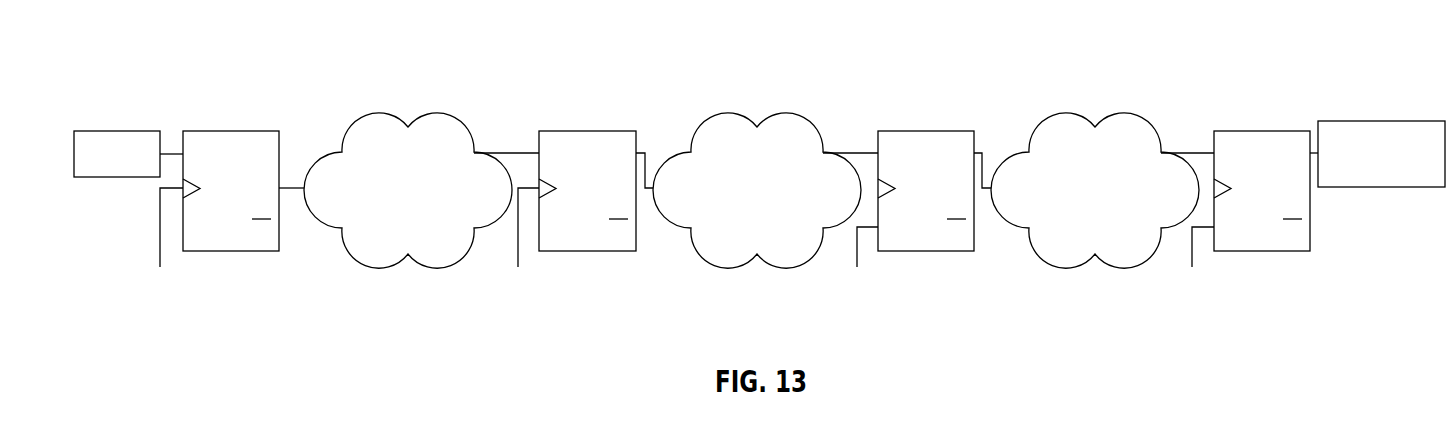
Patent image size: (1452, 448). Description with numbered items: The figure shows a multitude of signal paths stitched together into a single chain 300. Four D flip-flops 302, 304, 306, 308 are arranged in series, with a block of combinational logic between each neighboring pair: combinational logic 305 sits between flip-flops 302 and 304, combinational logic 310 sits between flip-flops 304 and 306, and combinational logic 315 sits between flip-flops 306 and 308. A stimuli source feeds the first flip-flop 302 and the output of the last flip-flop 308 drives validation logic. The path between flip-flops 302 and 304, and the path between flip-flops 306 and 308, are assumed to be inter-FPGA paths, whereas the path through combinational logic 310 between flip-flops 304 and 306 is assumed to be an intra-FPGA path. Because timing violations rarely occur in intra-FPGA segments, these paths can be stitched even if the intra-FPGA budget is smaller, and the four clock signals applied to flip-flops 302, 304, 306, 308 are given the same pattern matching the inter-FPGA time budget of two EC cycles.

The chain 300 is at (804, 40).
The flip-flop 302 is at (232, 131).
The flip-flop 304 is at (589, 131).
The flip-flop 306 is at (925, 131).
The flip-flop 308 is at (1262, 131).
The combinational logic 305 is at (377, 267).
The combinational logic 310 is at (728, 267).
The combinational logic 315 is at (1058, 267).